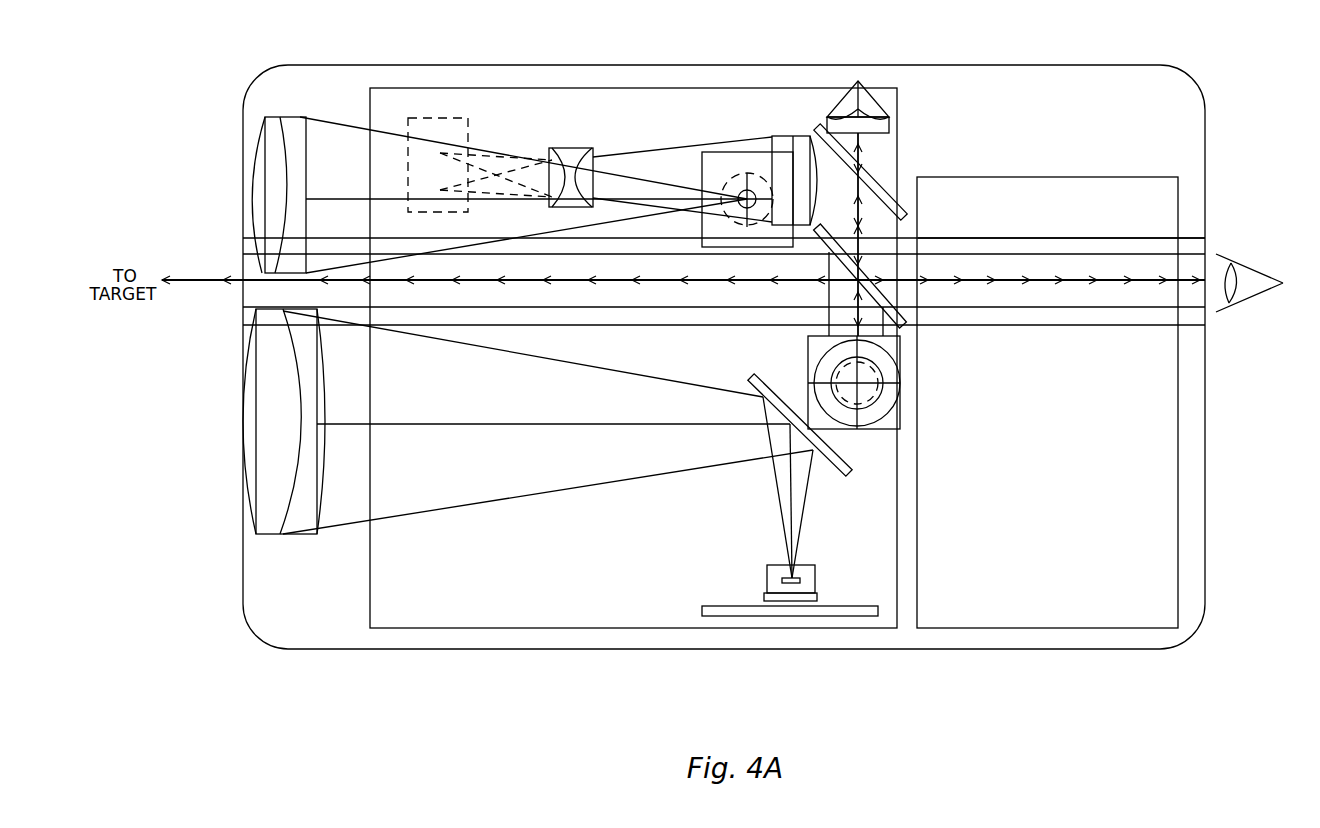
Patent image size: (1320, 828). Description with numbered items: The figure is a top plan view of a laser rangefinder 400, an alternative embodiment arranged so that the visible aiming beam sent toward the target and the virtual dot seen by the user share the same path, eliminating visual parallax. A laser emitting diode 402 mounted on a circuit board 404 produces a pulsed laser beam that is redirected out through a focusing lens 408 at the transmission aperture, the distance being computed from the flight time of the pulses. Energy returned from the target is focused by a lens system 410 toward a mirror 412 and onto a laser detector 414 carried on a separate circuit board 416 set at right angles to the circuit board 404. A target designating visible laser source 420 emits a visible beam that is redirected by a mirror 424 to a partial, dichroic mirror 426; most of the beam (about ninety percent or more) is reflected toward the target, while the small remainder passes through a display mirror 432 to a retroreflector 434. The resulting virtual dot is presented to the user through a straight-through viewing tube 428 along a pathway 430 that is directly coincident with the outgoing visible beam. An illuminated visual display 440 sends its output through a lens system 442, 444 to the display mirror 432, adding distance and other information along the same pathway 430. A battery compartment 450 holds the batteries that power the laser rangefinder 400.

The laser rangefinder 400 is at (718, 700).
The laser emitting diode 402 is at (727, 178).
The circuit board 404 is at (898, 128).
The focusing lens 408 is at (292, 117).
The lens system 410 is at (272, 535).
The mirror 412 is at (845, 475).
The laser detector 414 is at (816, 573).
The circuit board 416 is at (715, 606).
The target designating visible laser source 420 is at (878, 402).
The mirror 424 is at (900, 350).
The partial mirror 426 is at (893, 281).
The straight-through viewing tube 428 is at (1121, 240).
The pathway 430 is at (1085, 281).
The display mirror 432 is at (880, 183).
The retroreflector 434 is at (880, 98).
The illuminated visual display 440 is at (441, 118).
The lens system 442 is at (578, 148).
The lens system 444 is at (789, 136).
The battery compartment 450 is at (1099, 177).